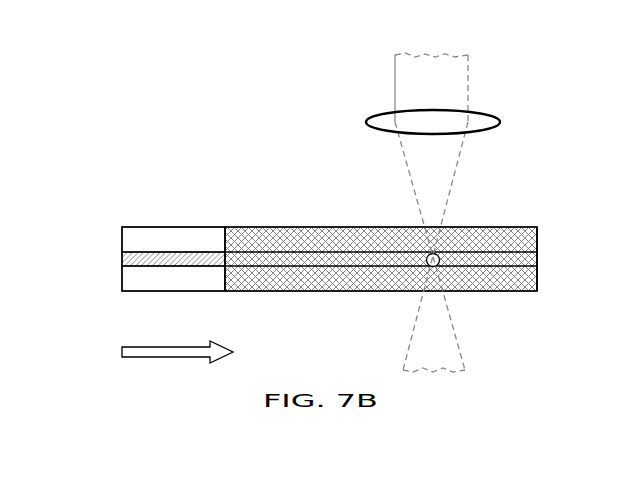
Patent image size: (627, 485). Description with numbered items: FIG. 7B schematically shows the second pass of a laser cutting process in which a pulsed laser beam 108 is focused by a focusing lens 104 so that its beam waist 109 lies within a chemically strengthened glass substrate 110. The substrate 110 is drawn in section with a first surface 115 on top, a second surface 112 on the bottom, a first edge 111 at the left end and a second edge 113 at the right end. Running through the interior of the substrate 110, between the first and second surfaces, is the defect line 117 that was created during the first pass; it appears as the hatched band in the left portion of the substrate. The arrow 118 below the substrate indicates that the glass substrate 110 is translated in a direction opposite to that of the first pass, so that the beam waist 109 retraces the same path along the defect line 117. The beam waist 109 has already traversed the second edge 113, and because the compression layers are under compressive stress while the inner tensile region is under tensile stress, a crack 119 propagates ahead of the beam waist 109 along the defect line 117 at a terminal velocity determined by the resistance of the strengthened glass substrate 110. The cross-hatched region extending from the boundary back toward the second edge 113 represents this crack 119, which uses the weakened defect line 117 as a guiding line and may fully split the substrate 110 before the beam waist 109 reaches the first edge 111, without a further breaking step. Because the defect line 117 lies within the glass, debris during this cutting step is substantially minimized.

The focusing lens 104 is at (500, 122).
The pulsed laser beam 108 is at (395, 72).
The beam waist 109 is at (427, 255).
The chemically strengthened glass substrate 110 is at (306, 218).
The first edge 111 is at (122, 238).
The second surface 112 is at (190, 292).
The second edge 113 is at (537, 270).
The first surface 115 is at (213, 227).
The defect line 117 is at (122, 258).
The arrow 118 is at (162, 358).
The crack 119 is at (328, 283).